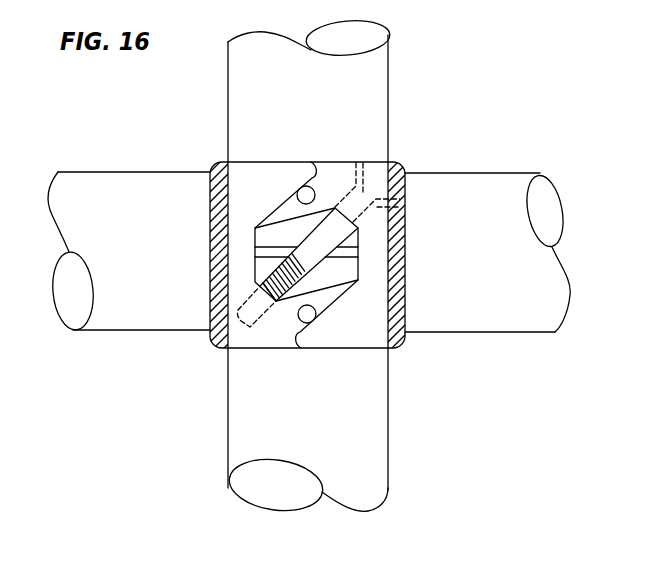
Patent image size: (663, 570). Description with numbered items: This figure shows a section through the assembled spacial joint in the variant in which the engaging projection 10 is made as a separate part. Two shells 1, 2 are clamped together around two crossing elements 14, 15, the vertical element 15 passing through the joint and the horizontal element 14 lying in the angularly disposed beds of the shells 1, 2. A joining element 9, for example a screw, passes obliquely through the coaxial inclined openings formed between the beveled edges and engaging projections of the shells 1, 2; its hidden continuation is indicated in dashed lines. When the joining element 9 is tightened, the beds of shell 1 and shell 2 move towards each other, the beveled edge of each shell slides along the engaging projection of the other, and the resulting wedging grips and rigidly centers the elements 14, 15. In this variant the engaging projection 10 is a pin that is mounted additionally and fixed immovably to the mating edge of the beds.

The shell 1 is at (218, 193).
The shell 2 is at (398, 332).
The joining element 9 is at (366, 191).
The engaging projection 10 is at (300, 316).
The element 14 is at (466, 194).
The element 15 is at (368, 80).